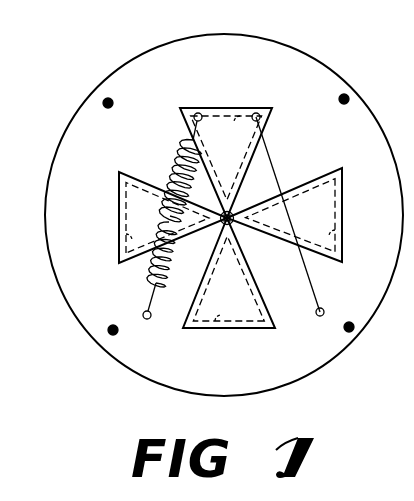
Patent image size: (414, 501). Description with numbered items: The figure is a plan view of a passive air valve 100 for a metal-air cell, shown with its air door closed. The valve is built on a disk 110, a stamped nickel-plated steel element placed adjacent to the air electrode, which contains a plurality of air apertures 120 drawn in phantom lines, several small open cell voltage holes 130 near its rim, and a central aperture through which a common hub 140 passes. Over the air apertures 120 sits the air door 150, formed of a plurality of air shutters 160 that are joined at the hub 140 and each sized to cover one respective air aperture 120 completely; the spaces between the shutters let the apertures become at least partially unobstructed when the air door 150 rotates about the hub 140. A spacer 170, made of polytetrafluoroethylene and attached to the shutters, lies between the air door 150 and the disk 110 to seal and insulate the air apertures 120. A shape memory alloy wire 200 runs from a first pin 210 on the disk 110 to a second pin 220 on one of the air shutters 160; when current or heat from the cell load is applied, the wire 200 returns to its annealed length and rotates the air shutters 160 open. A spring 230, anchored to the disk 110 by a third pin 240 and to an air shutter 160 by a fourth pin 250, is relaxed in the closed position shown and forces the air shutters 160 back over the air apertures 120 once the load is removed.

The passive air valve 100 is at (104, 58).
The disk 110 is at (279, 384).
The air apertures 120 is at (221, 113).
The open cell voltage holes 130 is at (106, 100).
The hub 140 is at (178, 266).
The air door 150 is at (219, 338).
The air shutters 160 is at (217, 125).
The spacer 170 is at (240, 230).
The shape memory alloy wire 200 is at (272, 162).
The first pin 210 is at (325, 309).
The second pin 220 is at (280, 78).
The spring 230 is at (180, 152).
The third pin 240 is at (144, 311).
The fourth pin 250 is at (195, 112).